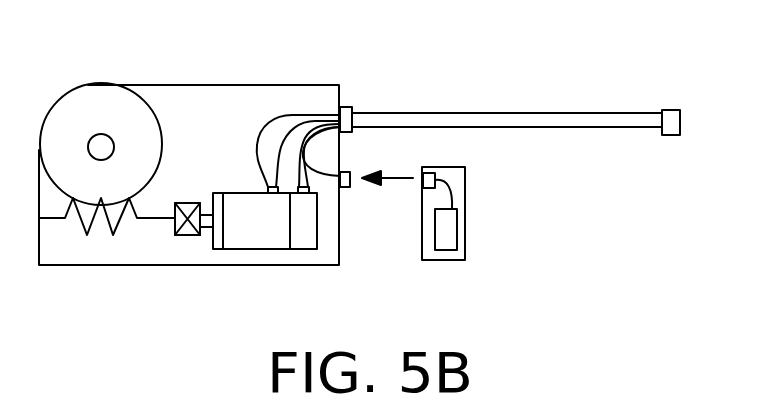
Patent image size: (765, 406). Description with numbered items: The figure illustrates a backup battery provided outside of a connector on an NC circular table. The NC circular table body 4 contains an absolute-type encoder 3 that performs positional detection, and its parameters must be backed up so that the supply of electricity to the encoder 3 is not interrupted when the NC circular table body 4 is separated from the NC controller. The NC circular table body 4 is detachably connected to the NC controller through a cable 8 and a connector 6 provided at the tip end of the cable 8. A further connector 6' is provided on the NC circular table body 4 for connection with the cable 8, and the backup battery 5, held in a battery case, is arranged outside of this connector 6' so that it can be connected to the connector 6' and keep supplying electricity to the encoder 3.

The NC circular table body 4 is at (185, 85).
The encoder 3 is at (300, 242).
The connector 6 is at (436, 89).
The cable 8 is at (624, 113).
The connector 6' is at (425, 237).
The backup battery 5 is at (448, 230).